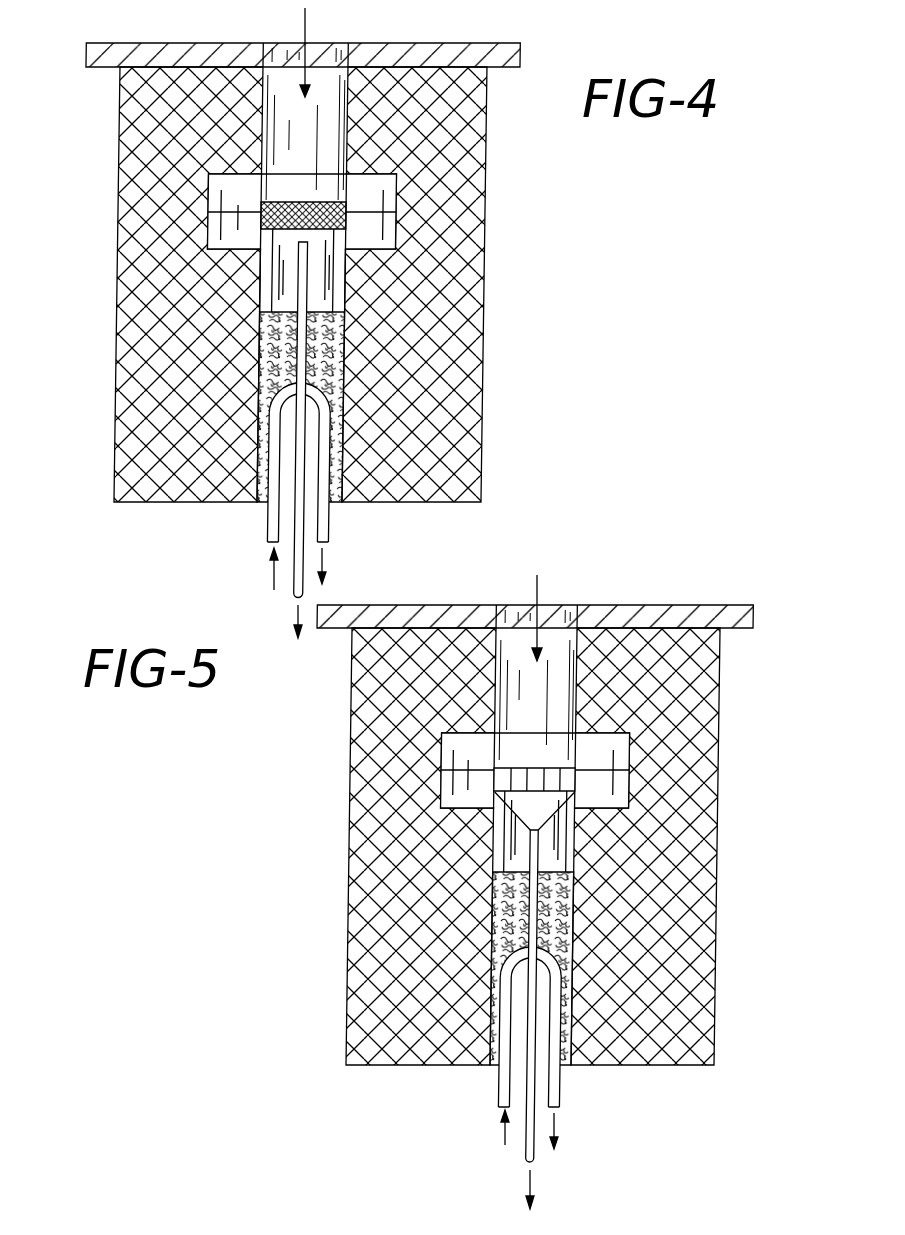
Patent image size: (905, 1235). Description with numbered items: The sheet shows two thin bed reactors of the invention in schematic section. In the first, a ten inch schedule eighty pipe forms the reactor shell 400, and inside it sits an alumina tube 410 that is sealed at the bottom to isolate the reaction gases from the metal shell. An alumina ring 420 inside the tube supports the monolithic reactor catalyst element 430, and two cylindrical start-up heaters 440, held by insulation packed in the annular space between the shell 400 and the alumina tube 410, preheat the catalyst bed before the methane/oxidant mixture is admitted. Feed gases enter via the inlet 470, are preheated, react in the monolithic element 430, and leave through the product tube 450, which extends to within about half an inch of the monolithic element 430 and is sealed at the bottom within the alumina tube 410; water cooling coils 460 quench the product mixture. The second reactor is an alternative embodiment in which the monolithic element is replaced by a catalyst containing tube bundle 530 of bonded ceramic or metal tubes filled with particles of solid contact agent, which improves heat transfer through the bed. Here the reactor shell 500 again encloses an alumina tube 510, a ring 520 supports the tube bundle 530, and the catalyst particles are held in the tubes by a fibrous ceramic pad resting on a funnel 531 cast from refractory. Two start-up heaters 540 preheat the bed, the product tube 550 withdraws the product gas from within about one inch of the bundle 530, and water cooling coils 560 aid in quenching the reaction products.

In FIG. 4, the reactor shell 400 is at (118, 147).
In FIG. 4, the alumina tube 410 is at (333, 347).
In FIG. 4, the alumina ring 420 is at (337, 275).
In FIG. 4, the monolithic reactor catalyst element 430 is at (317, 203).
In FIG. 4, the start-up heaters 440 is at (385, 228).
In FIG. 4, the product tube 450 is at (293, 358).
In FIG. 4, the water cooling coils 460 is at (332, 520).
In FIG. 4, the feed gas inlet 470 is at (327, 77).
In FIG. 5, the feed gas inlet 470 is at (555, 640).
In FIG. 5, the reactor shell 500 is at (352, 724).
In FIG. 5, the alumina tube 510 is at (565, 920).
In FIG. 5, the ring 520 is at (573, 850).
In FIG. 5, the catalyst containing tube bundle 530 is at (548, 766).
In FIG. 5, the funnel 531 is at (538, 810).
In FIG. 5, the start-up heaters 540 is at (613, 793).
In FIG. 5, the product tube 550 is at (533, 910).
In FIG. 5, the water cooling coils 560 is at (560, 1085).